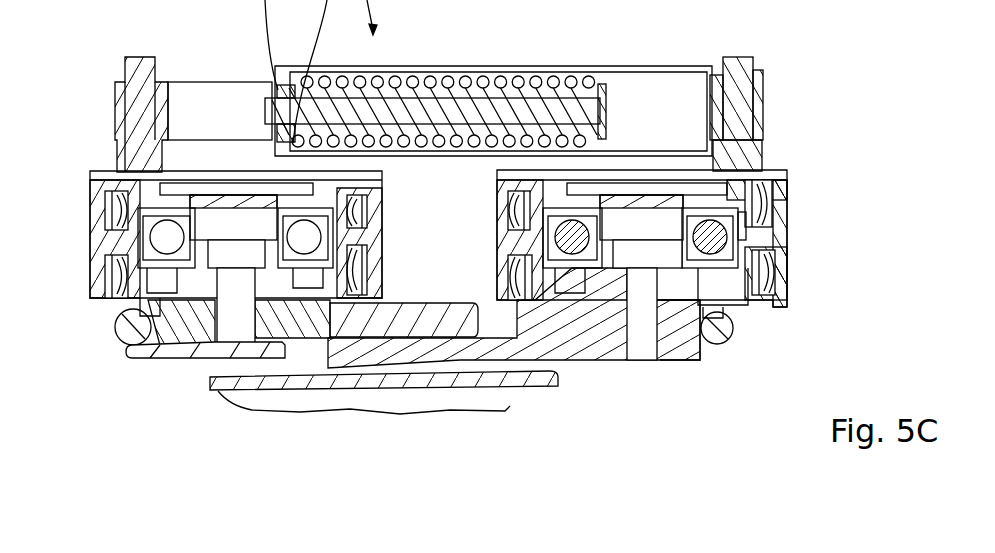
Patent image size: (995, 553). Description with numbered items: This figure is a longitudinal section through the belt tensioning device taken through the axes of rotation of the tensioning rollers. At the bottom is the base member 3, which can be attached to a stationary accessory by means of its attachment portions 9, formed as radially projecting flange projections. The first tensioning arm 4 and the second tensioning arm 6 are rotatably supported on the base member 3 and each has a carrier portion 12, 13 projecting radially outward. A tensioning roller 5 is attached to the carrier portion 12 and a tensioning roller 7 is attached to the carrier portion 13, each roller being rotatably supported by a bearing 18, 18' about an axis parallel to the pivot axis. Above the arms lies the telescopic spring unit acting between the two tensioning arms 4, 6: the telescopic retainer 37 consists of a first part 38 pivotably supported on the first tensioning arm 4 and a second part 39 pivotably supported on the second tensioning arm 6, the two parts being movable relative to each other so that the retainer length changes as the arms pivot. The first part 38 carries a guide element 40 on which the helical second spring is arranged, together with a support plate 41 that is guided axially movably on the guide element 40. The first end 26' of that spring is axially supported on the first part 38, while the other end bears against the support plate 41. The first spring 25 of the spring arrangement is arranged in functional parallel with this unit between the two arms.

The first part 38 is at (233, 80).
The support plate 41 is at (283, 84).
The guide element 40 is at (413, 110).
The first spring 25 is at (447, 80).
The second part 39 is at (520, 65).
The first end 26' is at (593, 78).
The first tensioning arm 4 is at (167, 425).
The telescopic retainer 37 is at (662, 62).
The seal 18' is at (796, 208).
The tensioning roller 7 is at (787, 237).
The bearing 18 is at (285, 238).
The tensioning roller 5 is at (95, 240).
The carrier portion 12 is at (286, 300).
The attachment portions 9 is at (508, 406).
The base member 3 is at (548, 402).
The carrier portion 13 is at (602, 300).
The second tensioning arm 6 is at (670, 385).